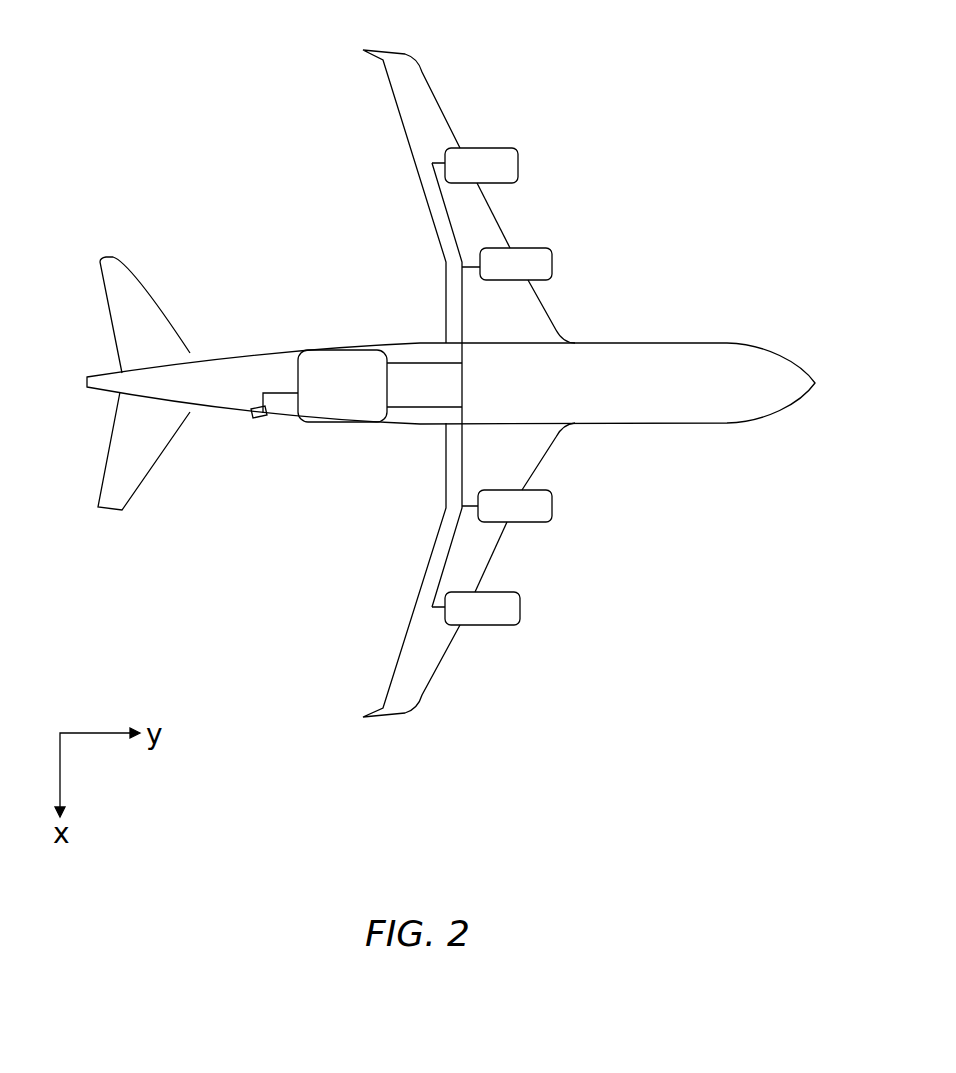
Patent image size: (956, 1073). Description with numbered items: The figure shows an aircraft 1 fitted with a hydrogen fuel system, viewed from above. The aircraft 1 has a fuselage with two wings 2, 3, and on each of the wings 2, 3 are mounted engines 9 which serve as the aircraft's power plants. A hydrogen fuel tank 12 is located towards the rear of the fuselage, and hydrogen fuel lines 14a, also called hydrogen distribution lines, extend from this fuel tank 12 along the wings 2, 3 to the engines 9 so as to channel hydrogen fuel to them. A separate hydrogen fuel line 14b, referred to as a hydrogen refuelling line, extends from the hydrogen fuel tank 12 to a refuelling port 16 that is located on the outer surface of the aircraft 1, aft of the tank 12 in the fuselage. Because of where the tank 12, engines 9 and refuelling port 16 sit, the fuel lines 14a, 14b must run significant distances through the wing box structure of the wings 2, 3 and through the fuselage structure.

The aircraft 1 is at (232, 174).
The wing 2 is at (422, 105).
The wing 3 is at (422, 655).
The engine 9 is at (505, 165).
The hydrogen fuel tank 12 is at (343, 391).
The hydrogen fuel line 14a is at (445, 217).
The hydrogen fuel line 14b is at (278, 393).
The refuelling port 16 is at (252, 420).